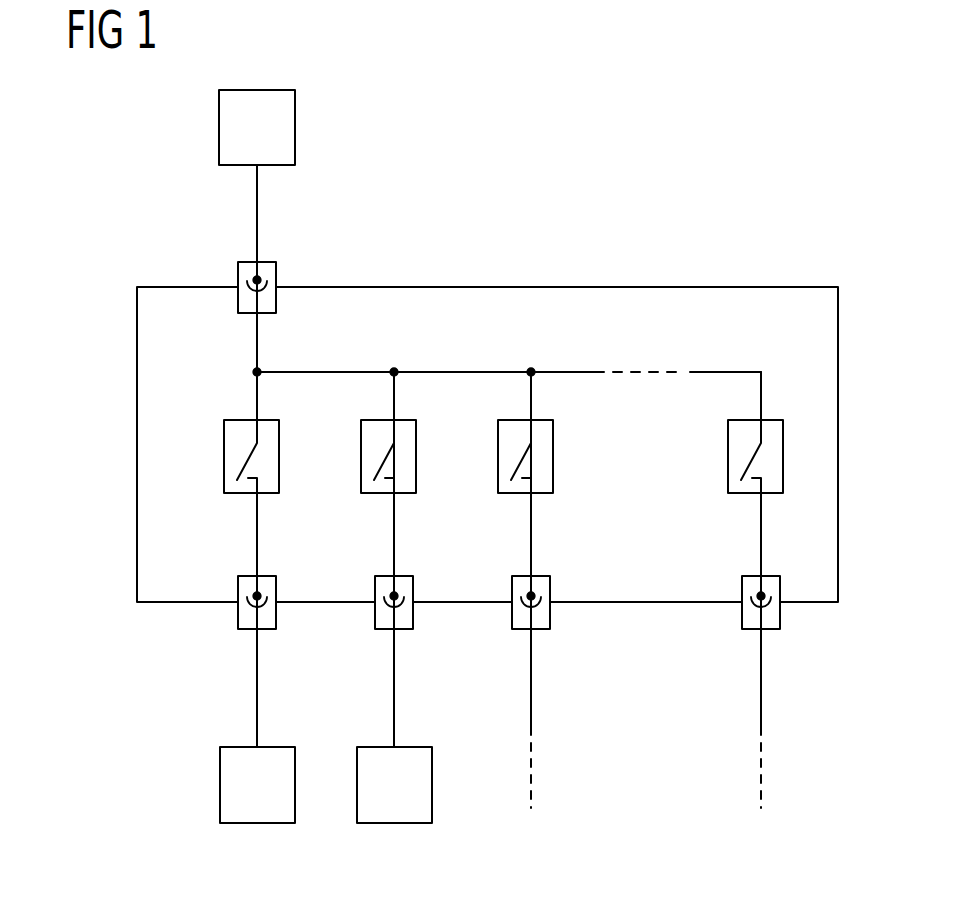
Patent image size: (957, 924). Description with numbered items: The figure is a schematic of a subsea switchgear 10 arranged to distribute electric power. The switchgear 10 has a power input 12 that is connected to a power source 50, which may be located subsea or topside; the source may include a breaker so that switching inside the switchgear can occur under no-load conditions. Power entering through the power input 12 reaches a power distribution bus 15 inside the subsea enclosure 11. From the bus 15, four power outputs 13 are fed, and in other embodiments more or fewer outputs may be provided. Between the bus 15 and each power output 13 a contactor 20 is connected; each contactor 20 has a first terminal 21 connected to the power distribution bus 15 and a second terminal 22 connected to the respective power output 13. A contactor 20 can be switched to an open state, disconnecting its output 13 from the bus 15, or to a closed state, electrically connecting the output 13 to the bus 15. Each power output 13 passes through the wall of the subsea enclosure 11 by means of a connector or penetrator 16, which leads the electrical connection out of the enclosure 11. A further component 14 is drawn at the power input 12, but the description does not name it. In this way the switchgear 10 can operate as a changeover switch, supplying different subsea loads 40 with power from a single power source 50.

The subsea switchgear 10 is at (122, 192).
The subsea enclosure 11 is at (136, 372).
The power input 12 is at (257, 262).
The power output 13 is at (250, 630).
The input sensor measuring element 14 is at (238, 272).
The power distribution bus 15 is at (478, 371).
The connector or penetrator 16 is at (238, 614).
The contactor 20 is at (224, 457).
The first terminal 21 is at (257, 420).
The second terminal 22 is at (257, 494).
The subsea load 40 is at (256, 824).
The power source 50 is at (297, 125).